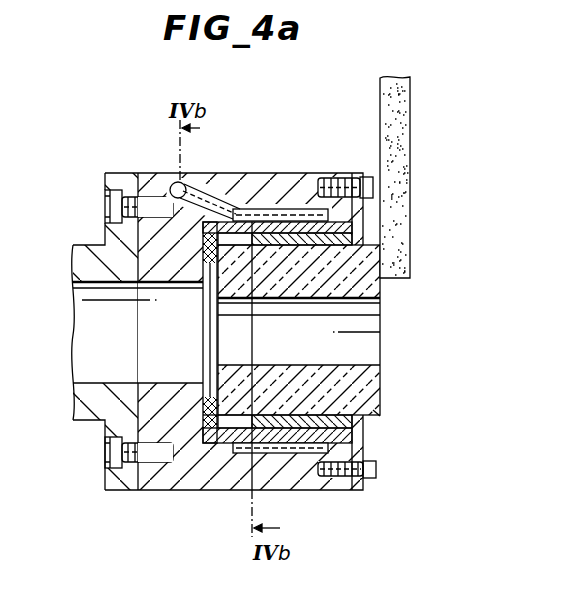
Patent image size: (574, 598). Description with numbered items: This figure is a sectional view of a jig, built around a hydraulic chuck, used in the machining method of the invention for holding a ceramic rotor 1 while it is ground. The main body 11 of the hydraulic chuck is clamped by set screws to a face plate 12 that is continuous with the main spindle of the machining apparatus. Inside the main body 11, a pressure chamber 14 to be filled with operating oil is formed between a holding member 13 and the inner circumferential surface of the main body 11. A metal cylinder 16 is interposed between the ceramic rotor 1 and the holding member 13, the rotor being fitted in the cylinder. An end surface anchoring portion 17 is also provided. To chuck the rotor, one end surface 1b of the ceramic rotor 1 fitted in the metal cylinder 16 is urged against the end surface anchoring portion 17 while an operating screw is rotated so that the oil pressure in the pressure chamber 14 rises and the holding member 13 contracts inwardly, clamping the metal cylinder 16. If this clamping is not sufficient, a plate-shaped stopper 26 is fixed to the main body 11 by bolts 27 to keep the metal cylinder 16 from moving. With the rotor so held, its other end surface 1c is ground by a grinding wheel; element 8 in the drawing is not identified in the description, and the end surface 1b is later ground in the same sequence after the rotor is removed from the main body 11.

The ceramic rotor 1 is at (382, 425).
The end surface 1b is at (200, 422).
The end surface 1c is at (378, 412).
The wall 8 is at (402, 217).
The main body 11 is at (148, 174).
The face plate 12 is at (110, 175).
The holding member 13 is at (300, 225).
The pressure chamber 14 is at (262, 212).
The metal cylinder 16 is at (339, 176).
The end surface anchoring portion 17 is at (223, 173).
The plate-shaped stopper 26 is at (357, 490).
The bolts 27 is at (377, 472).